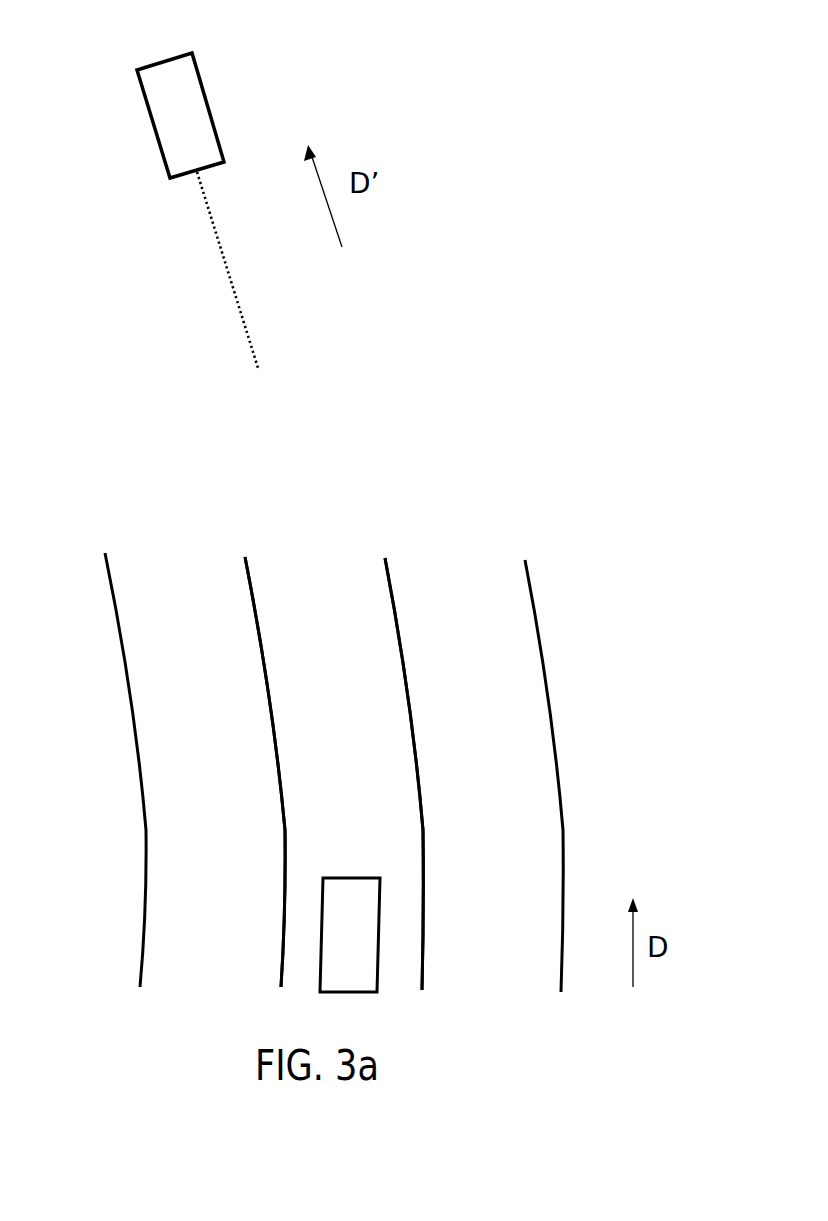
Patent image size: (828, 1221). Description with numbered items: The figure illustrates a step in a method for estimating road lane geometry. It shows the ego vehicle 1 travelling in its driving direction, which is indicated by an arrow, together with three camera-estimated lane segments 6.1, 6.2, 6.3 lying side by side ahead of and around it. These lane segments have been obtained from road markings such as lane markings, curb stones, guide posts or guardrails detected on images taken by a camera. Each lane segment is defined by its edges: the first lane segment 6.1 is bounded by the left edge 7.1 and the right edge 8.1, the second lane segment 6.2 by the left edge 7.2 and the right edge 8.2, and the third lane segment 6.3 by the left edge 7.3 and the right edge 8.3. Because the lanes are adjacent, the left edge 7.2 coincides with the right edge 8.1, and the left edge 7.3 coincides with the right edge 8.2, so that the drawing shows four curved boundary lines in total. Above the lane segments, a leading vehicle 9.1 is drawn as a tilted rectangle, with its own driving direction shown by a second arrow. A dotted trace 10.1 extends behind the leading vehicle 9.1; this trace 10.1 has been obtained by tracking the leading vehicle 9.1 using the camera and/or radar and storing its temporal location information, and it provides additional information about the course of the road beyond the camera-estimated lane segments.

The ego vehicle 1 is at (358, 950).
The camera-estimated lane segment 6.1 is at (227, 717).
The camera-estimated lane segment 6.2 is at (367, 717).
The camera-estimated lane segment 6.3 is at (508, 717).
The left edge 7.1 is at (115, 578).
The left edge 7.2 is at (253, 577).
The left edge 7.3 is at (393, 583).
The right edge 8.1 is at (257, 608).
The right edge 8.2 is at (397, 607).
The right edge 8.3 is at (538, 613).
The leading vehicle 9.1 is at (180, 95).
The trace 10.1 is at (226, 271).